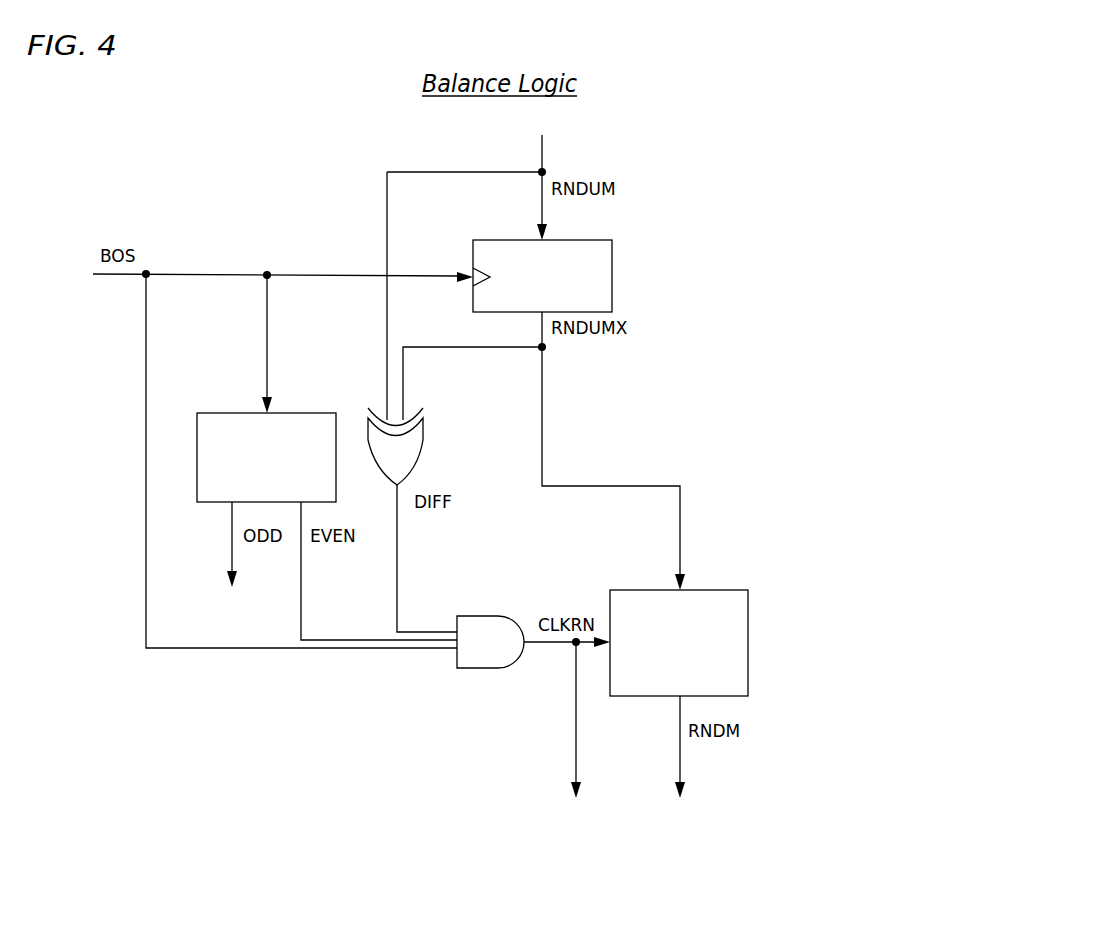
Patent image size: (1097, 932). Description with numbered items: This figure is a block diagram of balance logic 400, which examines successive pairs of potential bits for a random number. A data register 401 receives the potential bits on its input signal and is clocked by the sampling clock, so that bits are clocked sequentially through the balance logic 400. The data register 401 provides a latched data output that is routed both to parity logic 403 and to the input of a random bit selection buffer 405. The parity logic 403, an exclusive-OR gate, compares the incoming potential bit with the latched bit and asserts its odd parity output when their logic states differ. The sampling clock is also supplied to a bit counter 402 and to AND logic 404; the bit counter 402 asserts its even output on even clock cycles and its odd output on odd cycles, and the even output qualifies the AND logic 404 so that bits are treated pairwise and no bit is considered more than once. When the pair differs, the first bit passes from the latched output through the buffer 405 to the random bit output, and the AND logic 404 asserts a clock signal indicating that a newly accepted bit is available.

The balance logic 400 is at (841, 97).
The data register 401 is at (596, 239).
The bit counter 402 is at (237, 413).
The parity logic 403 is at (422, 432).
The AND logic 404 is at (492, 616).
The random bit selection buffer 405 is at (732, 590).